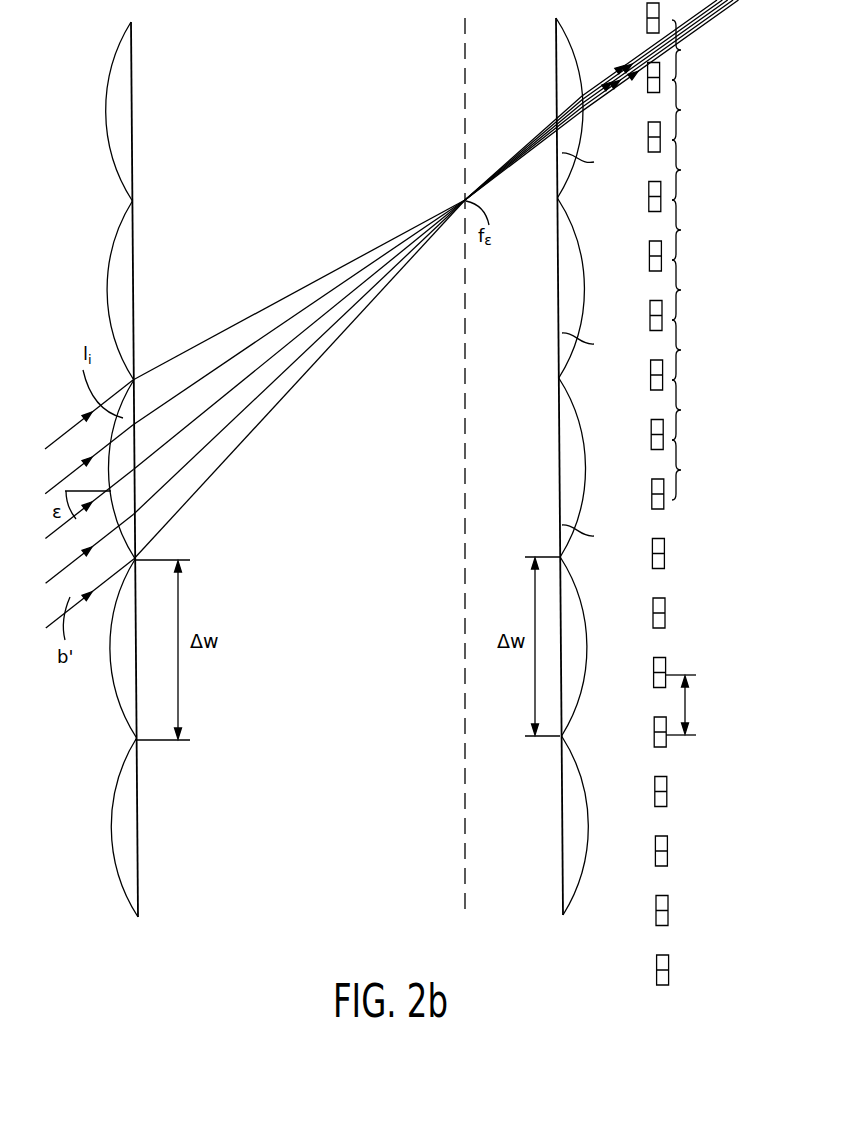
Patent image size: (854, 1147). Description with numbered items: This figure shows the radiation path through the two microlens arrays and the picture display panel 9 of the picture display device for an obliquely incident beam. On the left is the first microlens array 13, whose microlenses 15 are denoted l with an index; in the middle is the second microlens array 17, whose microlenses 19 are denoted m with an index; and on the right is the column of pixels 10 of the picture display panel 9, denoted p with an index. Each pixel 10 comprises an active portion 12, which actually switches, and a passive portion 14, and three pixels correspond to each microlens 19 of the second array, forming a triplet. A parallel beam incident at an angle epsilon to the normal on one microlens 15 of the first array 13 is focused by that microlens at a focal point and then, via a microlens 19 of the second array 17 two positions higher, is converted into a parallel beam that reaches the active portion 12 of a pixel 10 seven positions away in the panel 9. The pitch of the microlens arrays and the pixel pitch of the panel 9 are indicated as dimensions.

The picture display panel 9 is at (658, 530).
The pixel 10 is at (657, 822).
The active pixel portion 12 is at (655, 860).
The first microlens array 13 is at (113, 511).
The passive pixel portion 14 is at (655, 797).
The microlens of the first microlens array 15 is at (128, 872).
The second microlens array 17 is at (596, 508).
The microlens of the second microlens array 19 is at (568, 879).